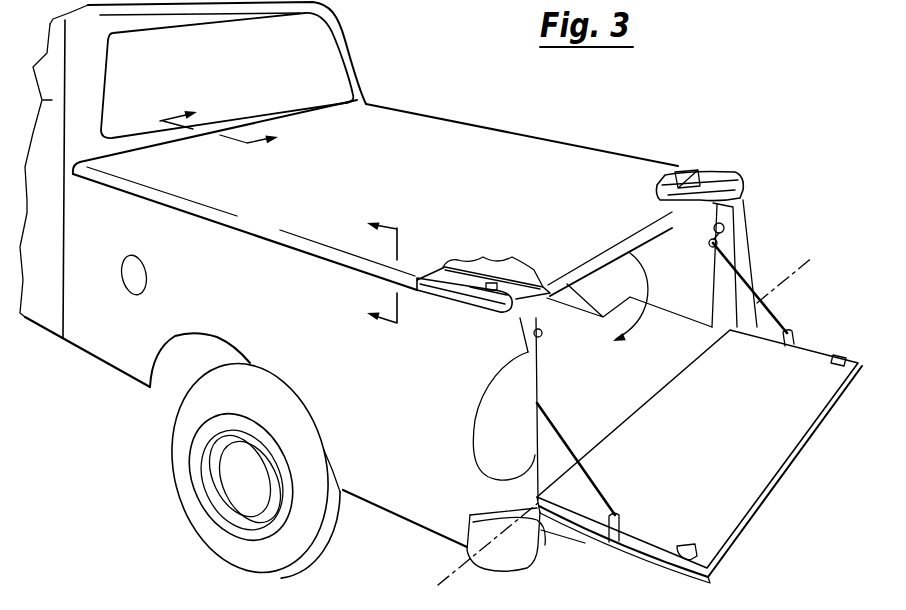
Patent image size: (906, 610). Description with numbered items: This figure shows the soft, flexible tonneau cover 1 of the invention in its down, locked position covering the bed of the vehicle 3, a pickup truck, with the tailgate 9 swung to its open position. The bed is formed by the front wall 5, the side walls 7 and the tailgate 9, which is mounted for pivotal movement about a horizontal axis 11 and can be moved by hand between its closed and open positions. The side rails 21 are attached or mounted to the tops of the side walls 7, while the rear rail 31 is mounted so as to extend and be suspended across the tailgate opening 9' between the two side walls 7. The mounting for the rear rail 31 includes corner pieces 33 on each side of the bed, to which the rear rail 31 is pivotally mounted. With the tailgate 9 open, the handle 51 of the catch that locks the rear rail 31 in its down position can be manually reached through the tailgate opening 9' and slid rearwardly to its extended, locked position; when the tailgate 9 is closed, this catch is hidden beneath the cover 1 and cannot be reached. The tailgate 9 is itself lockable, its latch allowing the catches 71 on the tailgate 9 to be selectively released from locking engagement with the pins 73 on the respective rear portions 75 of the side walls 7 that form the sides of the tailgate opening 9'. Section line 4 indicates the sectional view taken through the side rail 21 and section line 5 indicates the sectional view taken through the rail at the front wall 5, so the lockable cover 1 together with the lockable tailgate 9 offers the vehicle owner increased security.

The tonneau cover 1 is at (532, 174).
The vehicle 3 is at (186, 304).
The section line 4- 4 is at (395, 279).
The front wall 5 is at (210, 138).
The side walls 7 is at (536, 375).
The tailgate 9 is at (699, 456).
The tailgate opening 9' is at (592, 271).
The horizontal axis 11 is at (447, 583).
The side rails 21 is at (449, 280).
The rear rail 31 is at (521, 287).
The corner pieces 33 is at (481, 313).
The handle 51 is at (678, 172).
The catches 71 is at (836, 362).
The pins 73 is at (708, 228).
The rear portions 75 is at (727, 292).